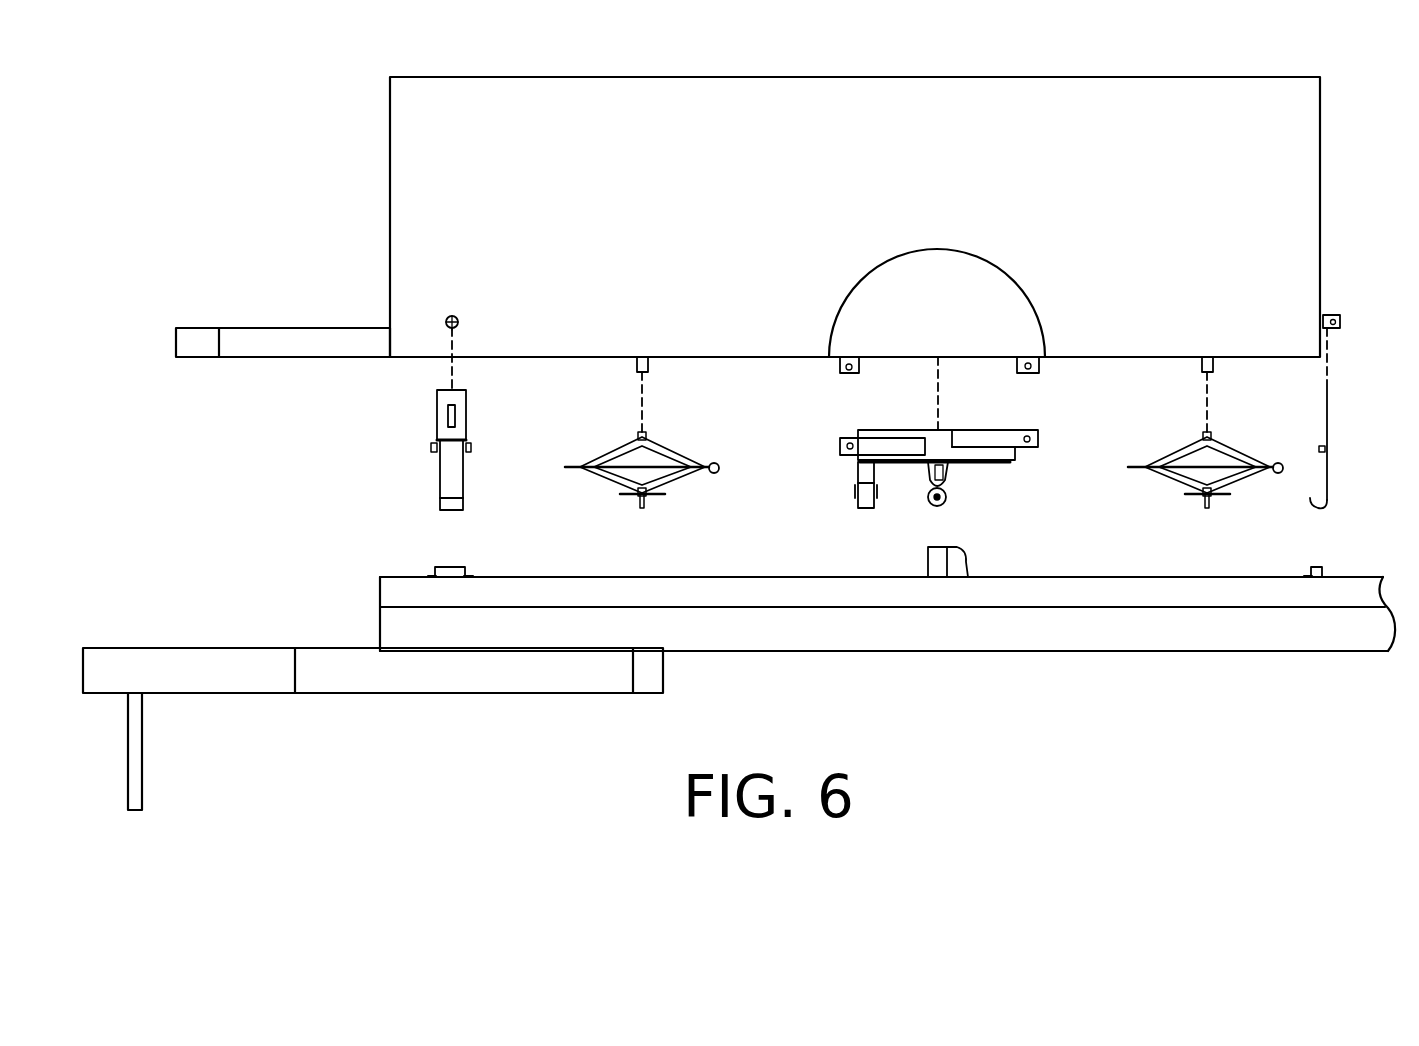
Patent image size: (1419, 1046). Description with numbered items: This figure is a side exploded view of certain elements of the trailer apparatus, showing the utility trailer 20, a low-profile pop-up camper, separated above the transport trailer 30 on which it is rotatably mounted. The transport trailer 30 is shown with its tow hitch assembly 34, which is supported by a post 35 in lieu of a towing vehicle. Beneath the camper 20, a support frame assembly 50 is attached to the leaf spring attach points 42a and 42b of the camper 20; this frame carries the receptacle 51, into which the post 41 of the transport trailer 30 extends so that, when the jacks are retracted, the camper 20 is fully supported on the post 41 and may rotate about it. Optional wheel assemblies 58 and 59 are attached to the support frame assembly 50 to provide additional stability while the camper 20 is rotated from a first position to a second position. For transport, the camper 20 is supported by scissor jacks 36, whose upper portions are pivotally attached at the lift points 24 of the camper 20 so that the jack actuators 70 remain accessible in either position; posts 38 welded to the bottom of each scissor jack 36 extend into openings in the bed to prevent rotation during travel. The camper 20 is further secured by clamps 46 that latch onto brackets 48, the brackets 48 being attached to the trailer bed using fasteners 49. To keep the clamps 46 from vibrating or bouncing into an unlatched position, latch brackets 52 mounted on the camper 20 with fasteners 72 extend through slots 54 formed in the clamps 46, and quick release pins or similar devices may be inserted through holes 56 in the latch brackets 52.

The utility trailer 20 is at (864, 205).
The lift points 24 is at (644, 356).
The transport trailer 30 is at (1312, 653).
The tow hitch assembly 34 is at (320, 695).
The post 35 is at (145, 723).
The scissor jacks 36 is at (673, 482).
The posts 38 is at (636, 503).
The post 41 is at (960, 577).
The leaf spring attach point 42a is at (842, 368).
The leaf spring attach point 42b is at (1040, 366).
The clamps 46 is at (437, 432).
The brackets 48 is at (452, 565).
The fasteners 49 is at (428, 574).
The support frame assembly 50 is at (1012, 465).
The receptacle 51 is at (925, 475).
The latch brackets 52 is at (450, 316).
The slots 54 is at (455, 410).
The holes 56 is at (1341, 323).
The wheel assembly 58 is at (860, 477).
The wheel assembly 59 is at (955, 487).
The jack actuators 70 is at (714, 462).
The fasteners 72 is at (460, 322).